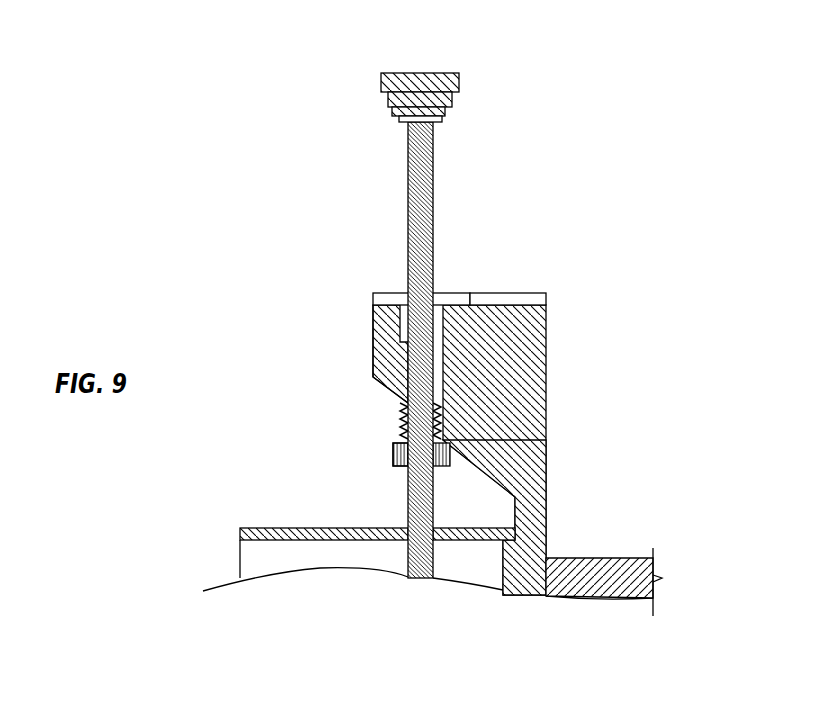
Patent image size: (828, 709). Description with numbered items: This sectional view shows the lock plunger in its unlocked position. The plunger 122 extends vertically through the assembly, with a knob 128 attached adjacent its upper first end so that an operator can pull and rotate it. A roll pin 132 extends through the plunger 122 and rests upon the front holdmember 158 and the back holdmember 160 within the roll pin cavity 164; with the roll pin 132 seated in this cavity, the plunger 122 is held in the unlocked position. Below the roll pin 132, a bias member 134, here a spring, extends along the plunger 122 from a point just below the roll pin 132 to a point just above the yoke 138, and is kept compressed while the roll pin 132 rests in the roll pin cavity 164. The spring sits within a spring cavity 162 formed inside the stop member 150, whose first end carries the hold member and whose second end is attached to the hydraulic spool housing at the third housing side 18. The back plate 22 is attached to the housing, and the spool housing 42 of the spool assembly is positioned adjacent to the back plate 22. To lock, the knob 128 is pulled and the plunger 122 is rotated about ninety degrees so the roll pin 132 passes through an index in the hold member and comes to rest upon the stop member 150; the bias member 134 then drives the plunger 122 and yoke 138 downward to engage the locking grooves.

The third housing side 18 is at (265, 528).
The back plate 22 is at (503, 580).
The spool housing 42 is at (583, 558).
The plunger 122 is at (424, 197).
The knob 128 is at (422, 72).
The roll pin 132 is at (375, 293).
The bias member 134 is at (400, 430).
The yoke 138 is at (394, 458).
The stop member 150 is at (547, 463).
The front holdmember 158 is at (375, 320).
The back holdmember 160 is at (533, 330).
The spring cavity 162 is at (400, 402).
The roll pin cavity 164 is at (548, 296).